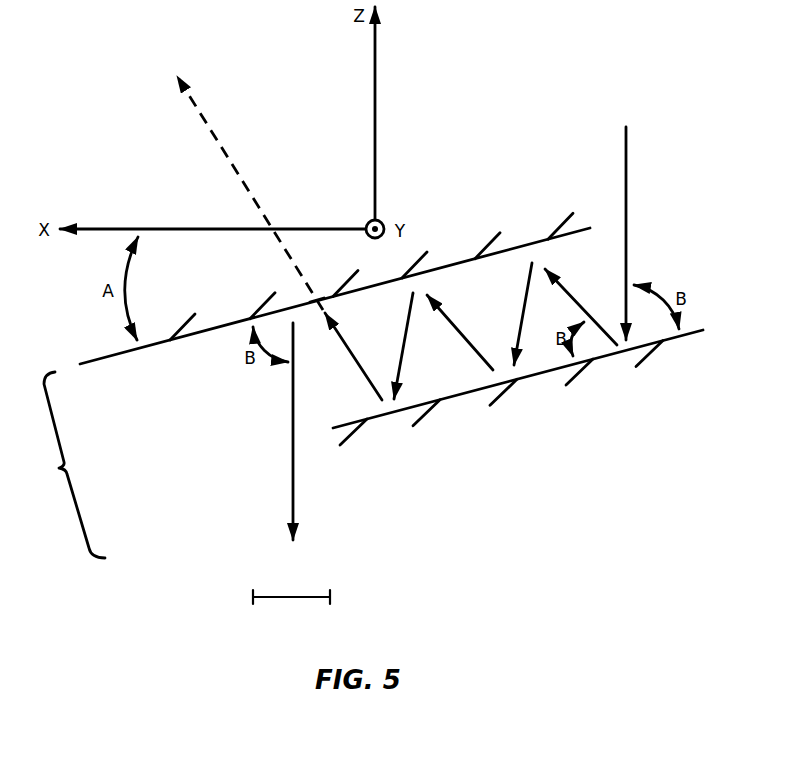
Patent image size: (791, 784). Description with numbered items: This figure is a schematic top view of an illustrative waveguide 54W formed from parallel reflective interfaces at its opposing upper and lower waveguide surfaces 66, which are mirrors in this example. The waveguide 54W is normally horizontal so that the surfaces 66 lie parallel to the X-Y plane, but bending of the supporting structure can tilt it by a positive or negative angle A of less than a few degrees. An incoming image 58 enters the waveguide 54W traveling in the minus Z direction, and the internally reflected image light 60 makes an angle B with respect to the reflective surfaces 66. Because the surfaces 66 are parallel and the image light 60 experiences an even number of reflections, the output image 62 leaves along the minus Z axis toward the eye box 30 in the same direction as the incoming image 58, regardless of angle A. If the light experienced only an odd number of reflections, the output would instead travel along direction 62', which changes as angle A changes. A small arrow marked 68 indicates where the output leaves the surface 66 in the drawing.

The eye box 30 is at (331, 597).
The waveguide 54W is at (60, 465).
The image 58 is at (628, 170).
The image light 60 is at (400, 367).
The output image 62 is at (257, 431).
The direction 62' is at (250, 193).
The waveguide surfaces 66 is at (518, 245).
The exit point on wall 68 is at (290, 296).